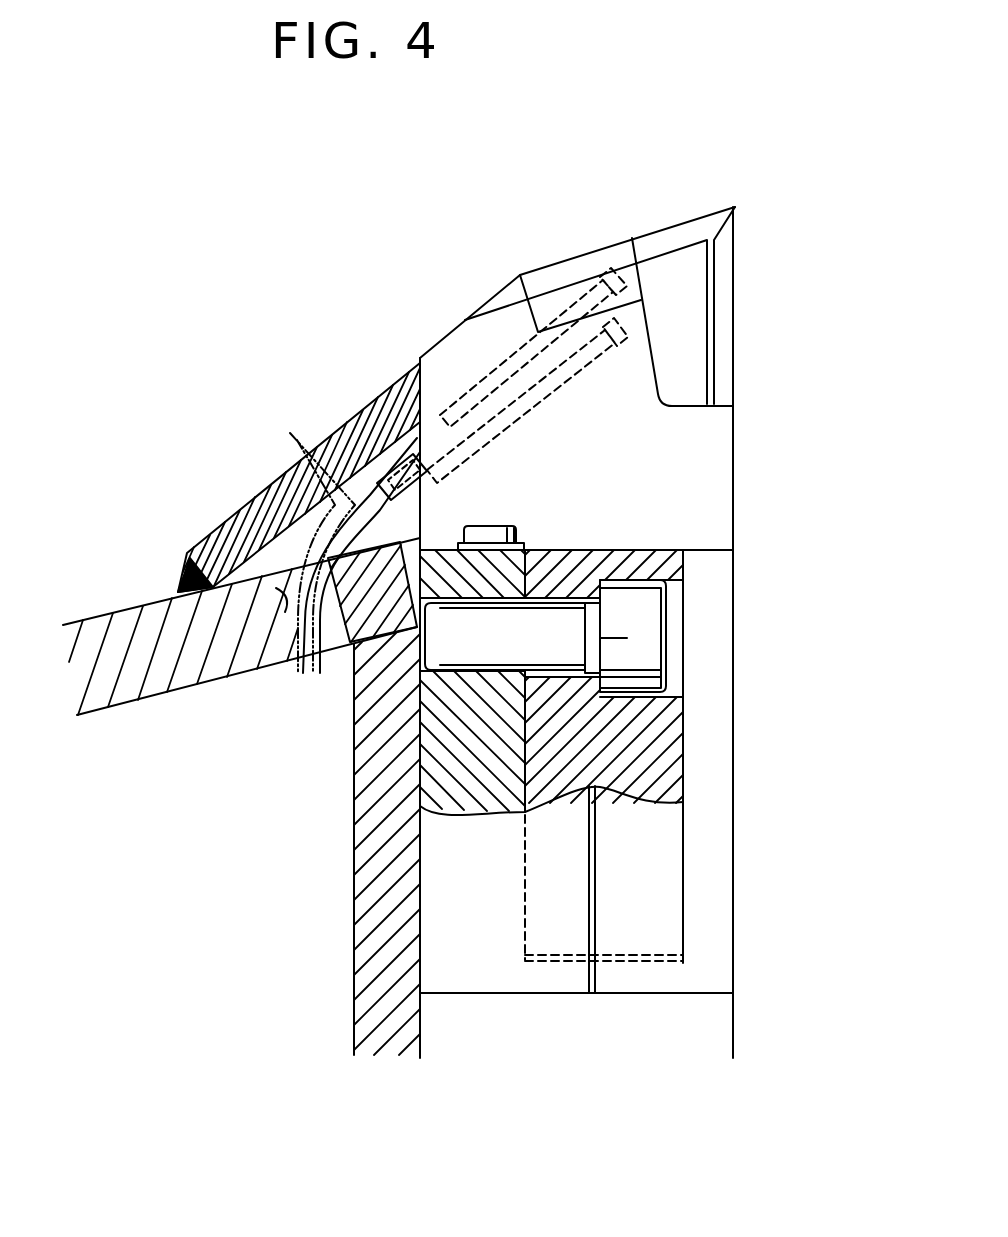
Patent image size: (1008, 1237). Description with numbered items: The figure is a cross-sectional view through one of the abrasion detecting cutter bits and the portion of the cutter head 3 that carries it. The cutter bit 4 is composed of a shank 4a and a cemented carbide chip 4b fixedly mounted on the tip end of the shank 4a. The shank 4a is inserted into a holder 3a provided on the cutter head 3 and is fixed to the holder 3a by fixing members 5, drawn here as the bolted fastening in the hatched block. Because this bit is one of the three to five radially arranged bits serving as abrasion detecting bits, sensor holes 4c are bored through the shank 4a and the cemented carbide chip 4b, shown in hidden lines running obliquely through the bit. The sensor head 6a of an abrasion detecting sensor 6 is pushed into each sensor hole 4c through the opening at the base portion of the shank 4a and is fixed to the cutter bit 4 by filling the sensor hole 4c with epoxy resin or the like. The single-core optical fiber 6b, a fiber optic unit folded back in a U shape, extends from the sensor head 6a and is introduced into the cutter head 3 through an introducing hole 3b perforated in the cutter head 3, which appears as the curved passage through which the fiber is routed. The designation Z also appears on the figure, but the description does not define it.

The bent holding plate Z is at (546, 250).
The cutter head 3 is at (398, 723).
The holder 3a is at (487, 982).
The introducing hole 3b is at (262, 670).
The cutter bit 4 is at (644, 632).
The shank 4a is at (717, 478).
The cemented carbide chip 4b is at (704, 381).
The sensor hole 4c is at (507, 408).
The fixing members 5 is at (653, 617).
The abrasion detecting sensor 6 is at (456, 218).
The sensor head 6a is at (520, 357).
The single-core optical fiber 6b is at (297, 440).